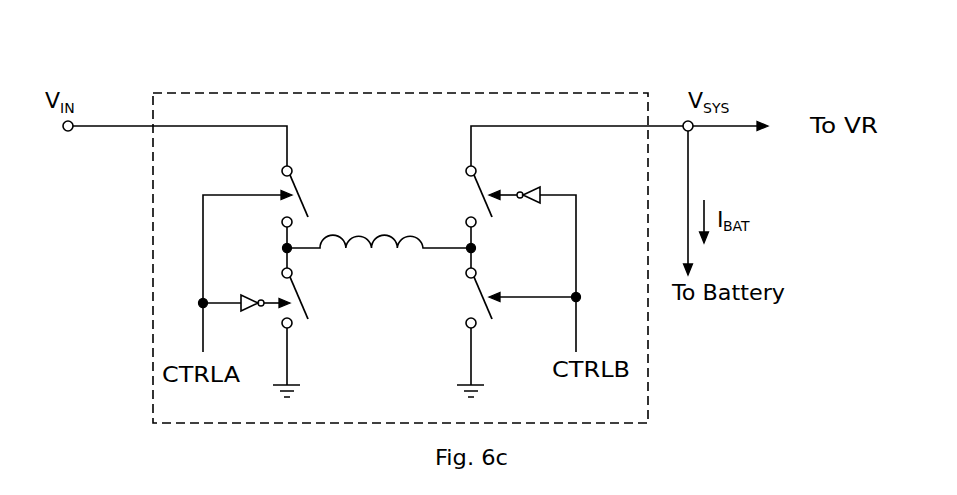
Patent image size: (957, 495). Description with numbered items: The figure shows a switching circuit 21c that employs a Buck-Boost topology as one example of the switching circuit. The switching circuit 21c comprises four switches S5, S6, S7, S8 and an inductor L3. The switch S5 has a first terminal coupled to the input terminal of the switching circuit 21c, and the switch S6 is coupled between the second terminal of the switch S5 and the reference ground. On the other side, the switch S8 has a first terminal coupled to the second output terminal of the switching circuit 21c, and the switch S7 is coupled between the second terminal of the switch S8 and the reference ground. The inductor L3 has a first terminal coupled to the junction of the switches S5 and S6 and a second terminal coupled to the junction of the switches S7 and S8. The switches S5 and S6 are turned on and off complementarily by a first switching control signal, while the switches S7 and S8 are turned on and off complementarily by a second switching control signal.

The switching circuit 21c is at (593, 93).
The switch S5 is at (311, 196).
The switch S6 is at (313, 298).
The switch S7 is at (462, 298).
The switch S8 is at (462, 196).
The inductor L3 is at (379, 225).